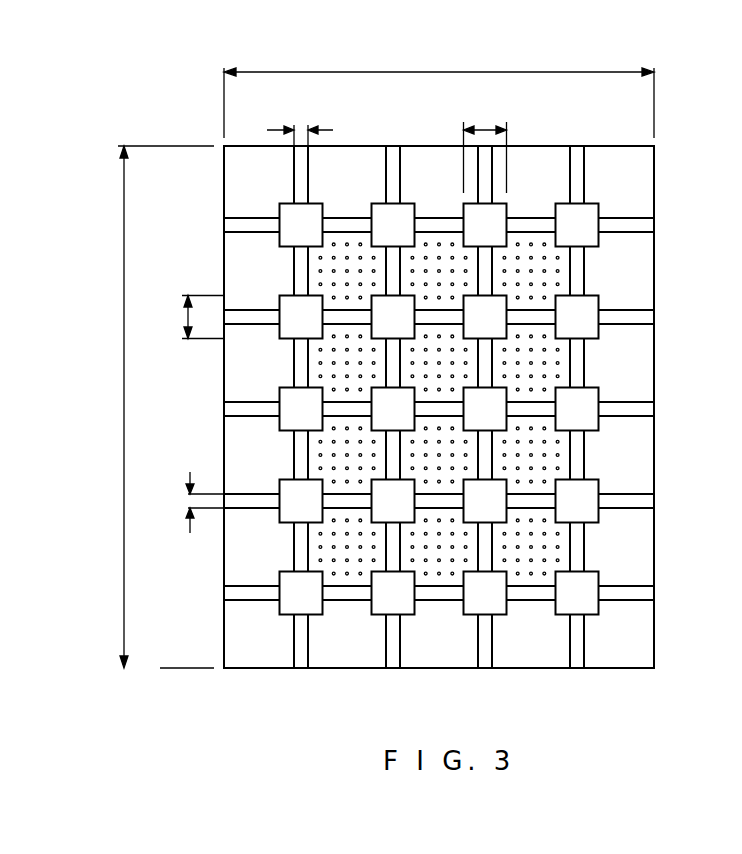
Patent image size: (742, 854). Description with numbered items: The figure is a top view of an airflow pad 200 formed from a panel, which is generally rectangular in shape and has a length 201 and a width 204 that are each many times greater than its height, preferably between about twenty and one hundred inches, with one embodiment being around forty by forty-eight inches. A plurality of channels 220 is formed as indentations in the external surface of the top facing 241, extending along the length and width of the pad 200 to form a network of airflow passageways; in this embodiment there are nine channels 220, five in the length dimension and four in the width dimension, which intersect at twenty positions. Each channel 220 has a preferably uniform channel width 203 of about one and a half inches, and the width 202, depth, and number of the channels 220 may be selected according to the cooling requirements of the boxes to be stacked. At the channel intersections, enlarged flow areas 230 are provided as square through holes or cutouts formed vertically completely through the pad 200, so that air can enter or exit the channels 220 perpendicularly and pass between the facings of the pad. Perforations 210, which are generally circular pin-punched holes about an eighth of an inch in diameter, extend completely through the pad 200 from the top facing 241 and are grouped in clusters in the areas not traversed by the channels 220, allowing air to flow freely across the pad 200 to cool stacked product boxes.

The airflow pad 200 is at (235, 680).
The length 201 is at (125, 413).
The width 202 is at (482, 125).
The channel width 203 is at (298, 130).
The width 204 is at (485, 72).
The perforations 210 is at (343, 575).
The channels 220 is at (499, 656).
The enlarged flow areas 230 is at (590, 211).
The top facing 241 is at (628, 638).